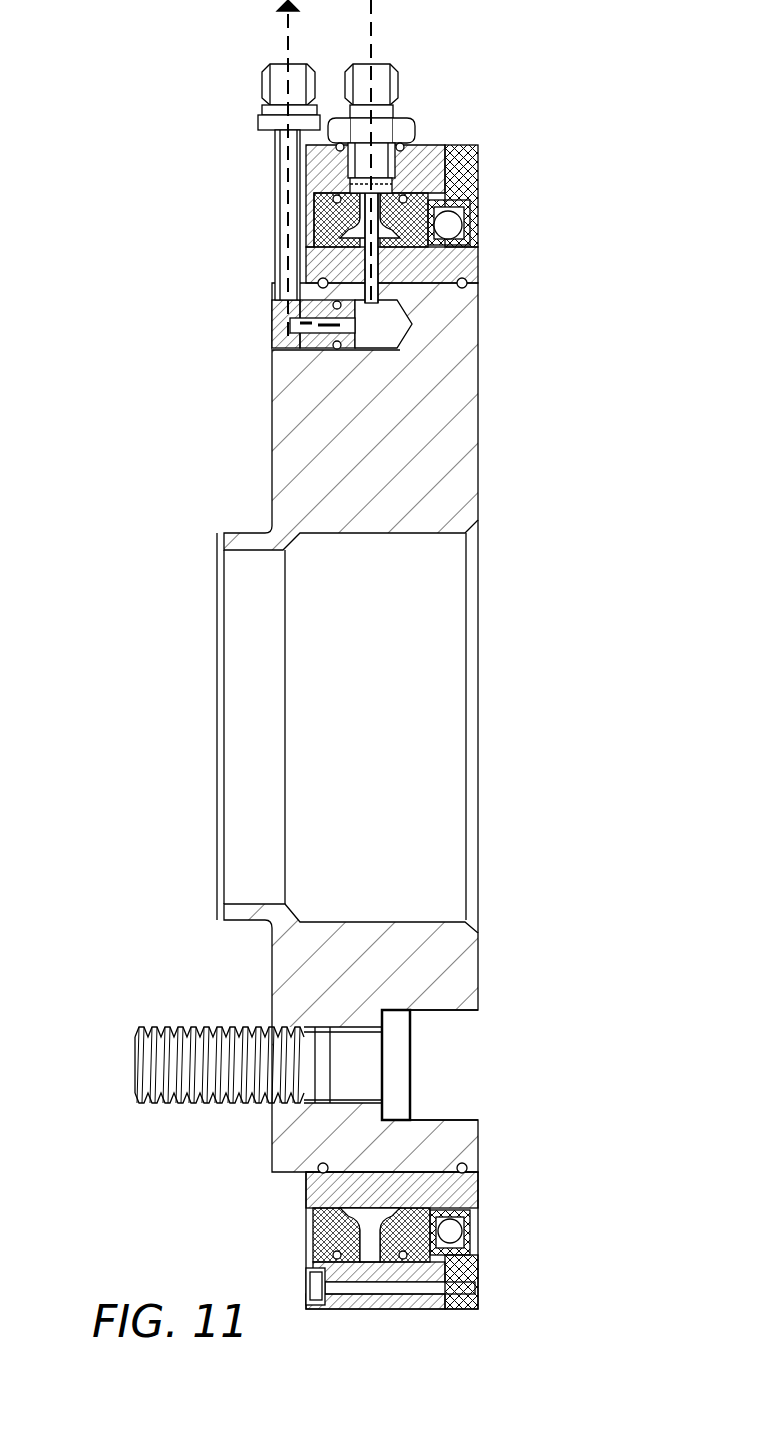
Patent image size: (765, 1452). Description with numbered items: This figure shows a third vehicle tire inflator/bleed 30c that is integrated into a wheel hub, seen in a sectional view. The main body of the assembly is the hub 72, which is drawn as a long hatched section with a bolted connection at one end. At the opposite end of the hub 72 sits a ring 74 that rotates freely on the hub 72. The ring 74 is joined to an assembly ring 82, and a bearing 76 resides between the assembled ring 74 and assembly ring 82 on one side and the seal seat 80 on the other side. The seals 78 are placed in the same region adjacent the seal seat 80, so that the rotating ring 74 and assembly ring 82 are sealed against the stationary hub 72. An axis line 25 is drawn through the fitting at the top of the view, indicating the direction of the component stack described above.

The third vehicle tire inflator/bleed 30c is at (152, 236).
The axis of rotation 25 is at (287, 38).
The hub 72 is at (453, 412).
The ring 74 is at (417, 165).
The bearing 76 is at (445, 223).
The seals 78 is at (332, 210).
The seal seat 80 is at (467, 270).
The assembly ring 82 is at (470, 170).